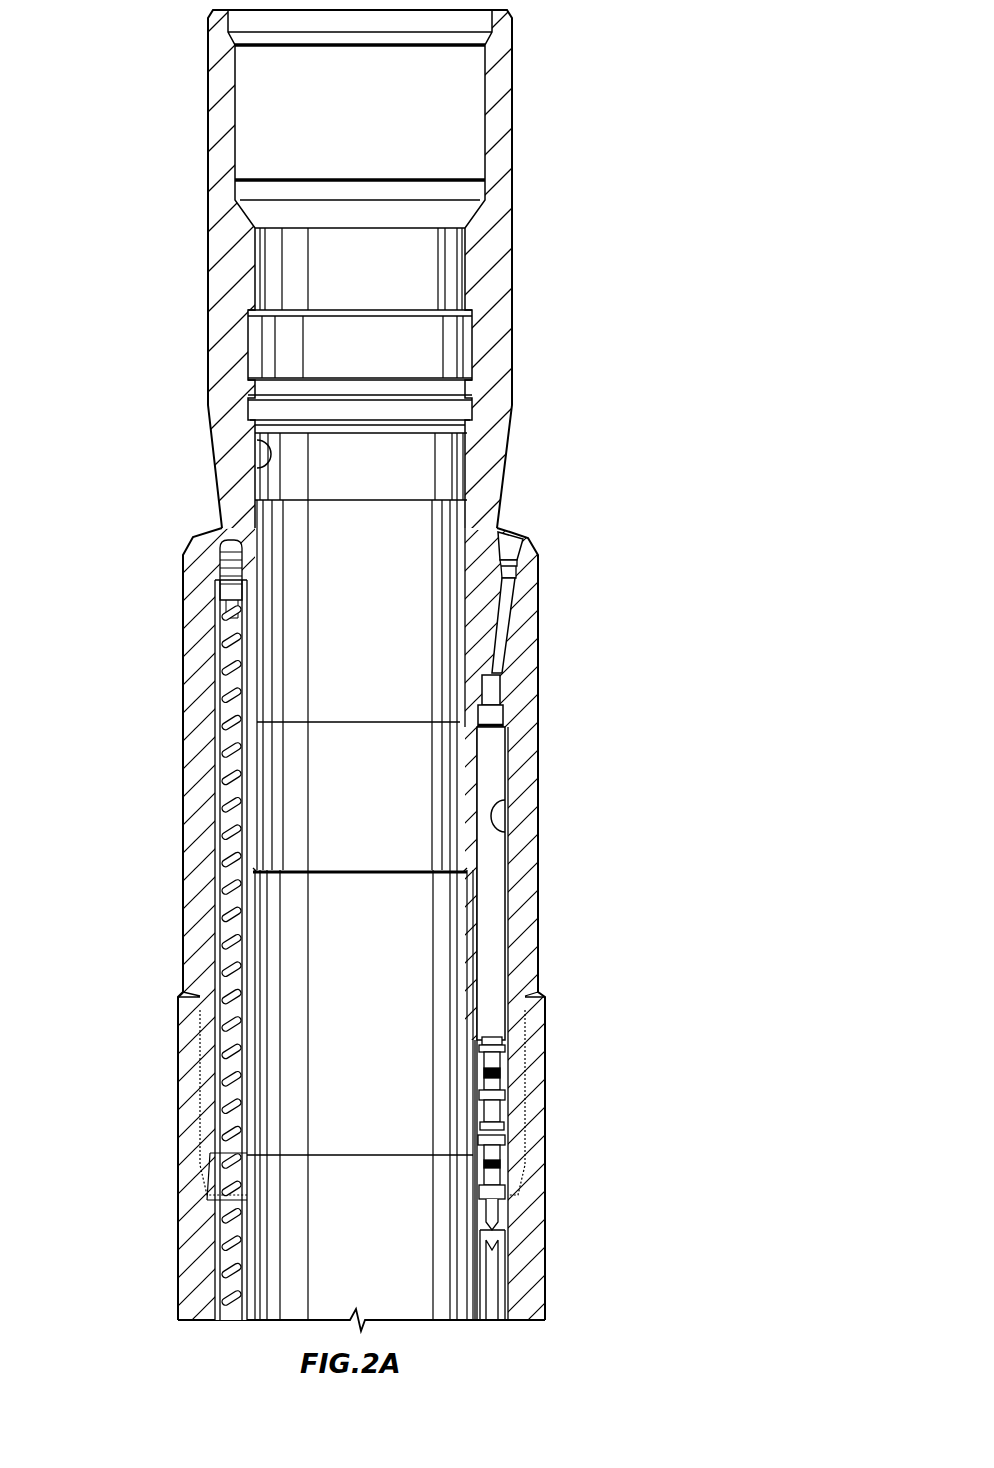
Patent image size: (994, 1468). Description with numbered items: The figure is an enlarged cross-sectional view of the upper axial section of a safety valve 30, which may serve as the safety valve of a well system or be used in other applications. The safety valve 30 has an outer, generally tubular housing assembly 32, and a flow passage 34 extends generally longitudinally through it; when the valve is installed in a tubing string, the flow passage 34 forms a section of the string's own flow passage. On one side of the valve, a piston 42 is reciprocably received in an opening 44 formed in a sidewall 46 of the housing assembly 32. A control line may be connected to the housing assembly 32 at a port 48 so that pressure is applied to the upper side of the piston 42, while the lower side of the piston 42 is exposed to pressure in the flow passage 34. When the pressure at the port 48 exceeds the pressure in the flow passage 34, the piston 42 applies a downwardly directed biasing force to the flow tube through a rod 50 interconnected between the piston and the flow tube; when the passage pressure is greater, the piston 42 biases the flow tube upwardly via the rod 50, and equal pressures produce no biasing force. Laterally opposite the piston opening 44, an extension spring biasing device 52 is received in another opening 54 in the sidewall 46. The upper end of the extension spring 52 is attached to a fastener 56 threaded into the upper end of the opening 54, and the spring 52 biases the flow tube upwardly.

The safety valve 30 is at (684, 118).
The housing assembly 32 is at (514, 322).
The flow passage 34 is at (253, 482).
The piston 42 is at (507, 1100).
The opening 44 is at (505, 800).
The sidewall 46 is at (527, 740).
The port 48 is at (513, 530).
The rod 50 is at (508, 1245).
The extension spring biasing device 52 is at (218, 697).
The opening 54 is at (218, 769).
The fastener 56 is at (222, 566).